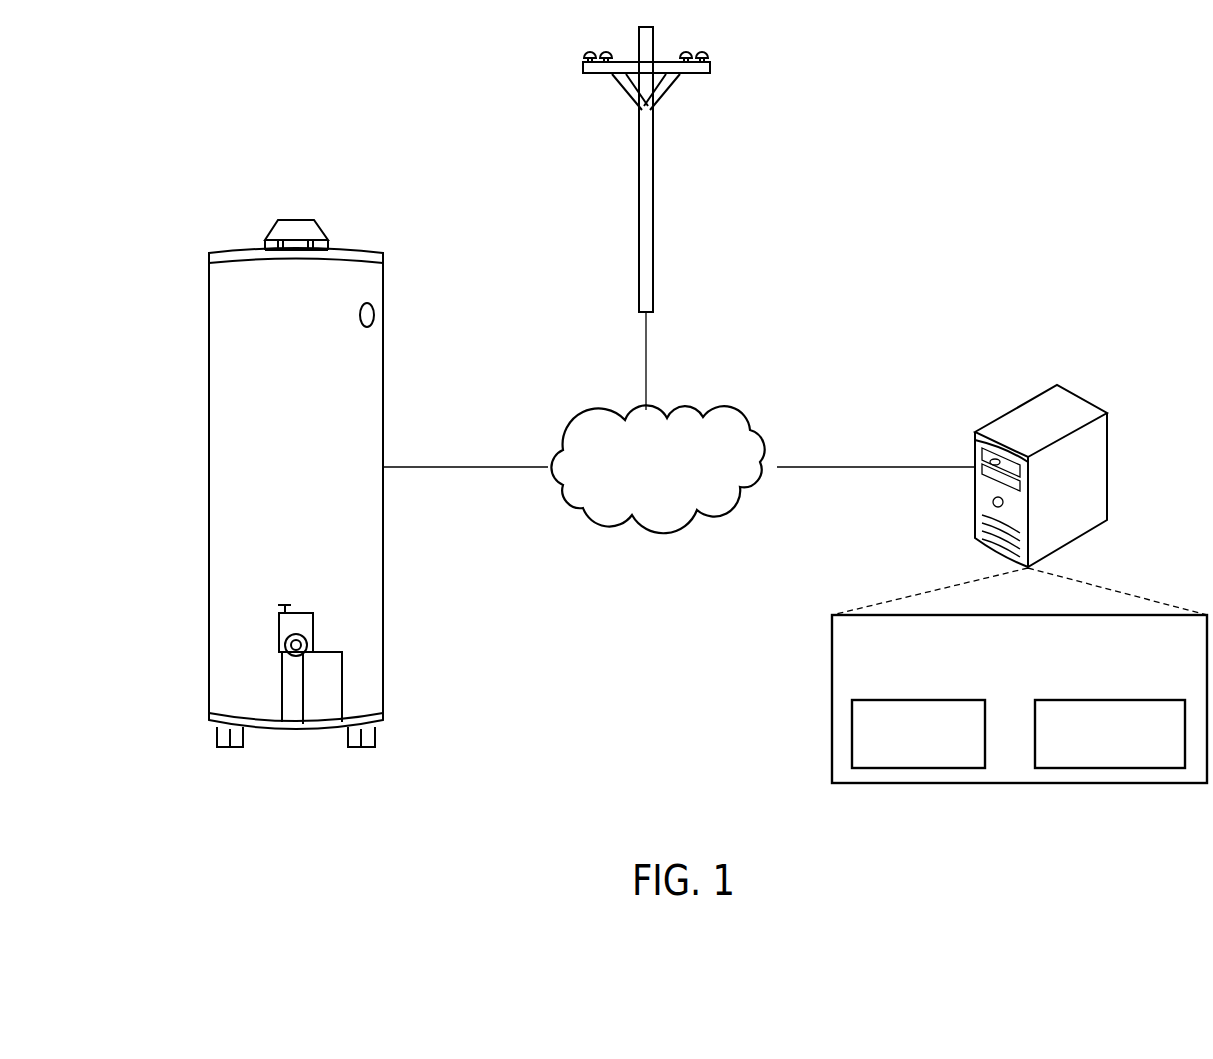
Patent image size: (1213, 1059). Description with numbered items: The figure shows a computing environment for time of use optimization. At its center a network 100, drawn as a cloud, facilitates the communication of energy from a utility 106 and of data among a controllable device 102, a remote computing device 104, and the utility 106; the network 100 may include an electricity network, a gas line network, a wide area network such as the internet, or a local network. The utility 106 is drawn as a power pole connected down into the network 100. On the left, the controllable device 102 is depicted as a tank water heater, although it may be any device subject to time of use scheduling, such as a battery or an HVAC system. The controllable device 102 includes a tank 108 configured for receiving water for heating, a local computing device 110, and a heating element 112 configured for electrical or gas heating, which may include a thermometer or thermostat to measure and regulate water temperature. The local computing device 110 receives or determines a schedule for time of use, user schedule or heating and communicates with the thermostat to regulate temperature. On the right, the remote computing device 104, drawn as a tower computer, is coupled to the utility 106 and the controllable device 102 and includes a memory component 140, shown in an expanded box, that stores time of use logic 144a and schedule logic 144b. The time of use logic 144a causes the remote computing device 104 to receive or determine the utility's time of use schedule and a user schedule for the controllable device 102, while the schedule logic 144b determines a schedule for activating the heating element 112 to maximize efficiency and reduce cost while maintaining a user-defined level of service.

The network 100 is at (683, 499).
The controllable device 102 is at (340, 486).
The remote computing device 104 is at (1134, 420).
The utility 106 is at (690, 218).
The tank 108 is at (383, 648).
The local computing device 110 is at (337, 728).
The heating element 112 is at (238, 603).
The memory component 140 is at (1192, 652).
The time of use logic 144a is at (941, 700).
The schedule logic 144b is at (1131, 700).